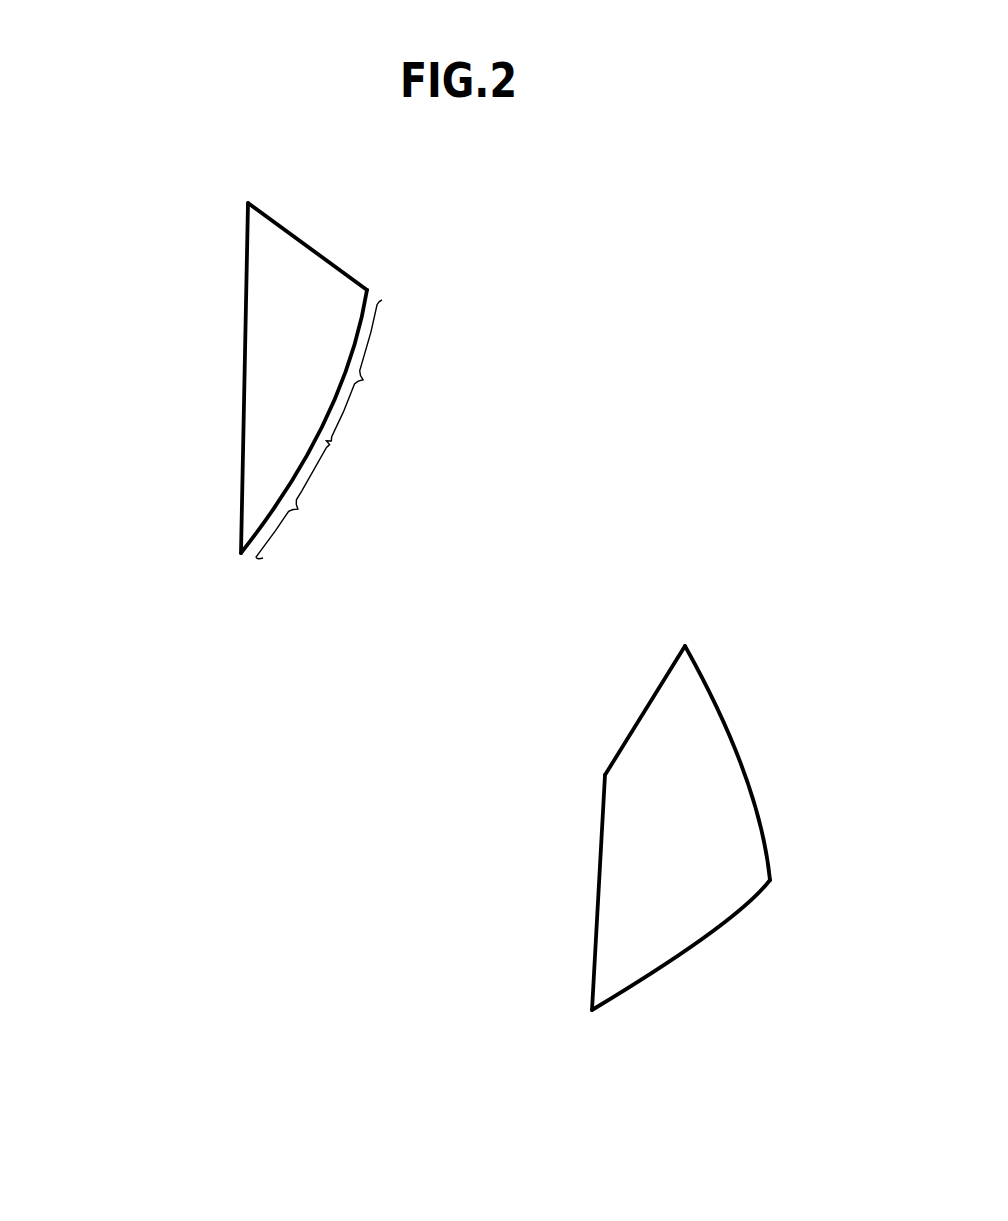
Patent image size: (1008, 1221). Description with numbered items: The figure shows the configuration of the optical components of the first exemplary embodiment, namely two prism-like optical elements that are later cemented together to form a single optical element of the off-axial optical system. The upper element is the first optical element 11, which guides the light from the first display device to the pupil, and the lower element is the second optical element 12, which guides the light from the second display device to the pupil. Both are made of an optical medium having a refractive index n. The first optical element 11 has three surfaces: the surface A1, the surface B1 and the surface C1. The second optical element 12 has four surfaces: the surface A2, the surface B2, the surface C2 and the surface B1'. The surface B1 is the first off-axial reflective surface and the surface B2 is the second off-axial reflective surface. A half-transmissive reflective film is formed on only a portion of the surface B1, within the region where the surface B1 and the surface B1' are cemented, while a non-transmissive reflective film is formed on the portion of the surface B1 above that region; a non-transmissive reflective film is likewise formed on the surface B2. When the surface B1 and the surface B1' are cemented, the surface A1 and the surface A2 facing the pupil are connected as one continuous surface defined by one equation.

The first optical element 11 is at (315, 354).
The second optical element 12 is at (642, 848).
The surface A1 is at (258, 277).
The surface B1 is at (398, 424).
The surface C1 is at (315, 168).
The surface A2 is at (606, 914).
The surface B1' is at (591, 710).
The surface B2 is at (808, 700).
The surface C2 is at (663, 970).